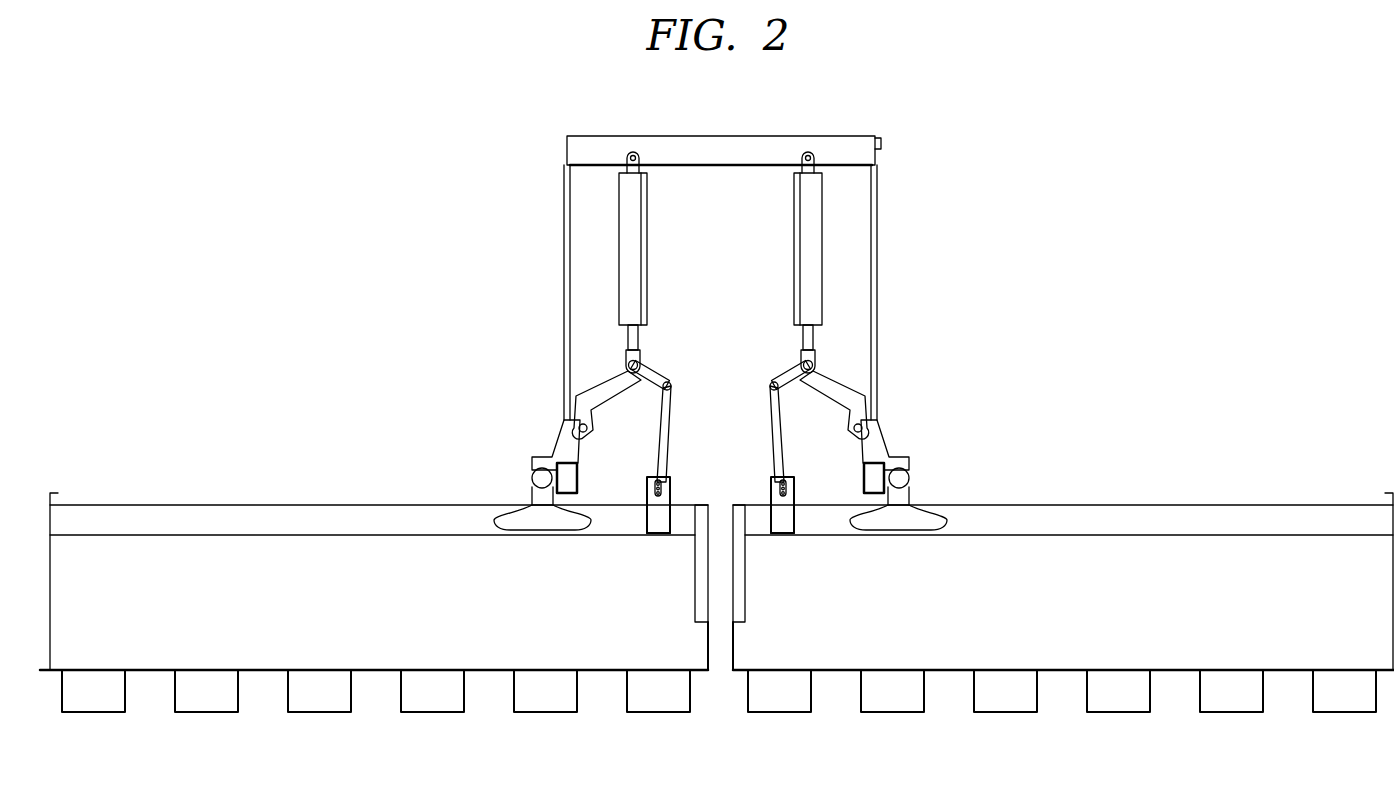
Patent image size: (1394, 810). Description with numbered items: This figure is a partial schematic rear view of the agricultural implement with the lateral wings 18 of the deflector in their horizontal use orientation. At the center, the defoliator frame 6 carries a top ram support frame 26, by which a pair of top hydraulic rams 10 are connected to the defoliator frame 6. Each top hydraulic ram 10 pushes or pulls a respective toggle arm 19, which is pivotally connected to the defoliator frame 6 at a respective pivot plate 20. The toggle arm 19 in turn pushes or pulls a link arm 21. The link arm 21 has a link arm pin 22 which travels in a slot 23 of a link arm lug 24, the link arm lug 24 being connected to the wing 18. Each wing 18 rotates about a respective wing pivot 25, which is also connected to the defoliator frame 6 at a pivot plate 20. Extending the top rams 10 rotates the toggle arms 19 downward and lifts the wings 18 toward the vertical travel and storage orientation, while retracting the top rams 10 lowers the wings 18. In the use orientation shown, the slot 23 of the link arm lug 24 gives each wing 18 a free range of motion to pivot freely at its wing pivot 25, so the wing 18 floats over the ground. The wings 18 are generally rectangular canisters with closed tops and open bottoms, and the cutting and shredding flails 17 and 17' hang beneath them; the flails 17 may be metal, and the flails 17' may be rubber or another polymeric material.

The top ram support frame 26 is at (722, 135).
The top hydraulic ram 10 is at (648, 217).
The toggle arm 19 is at (653, 372).
The pivot plate 20 is at (555, 438).
The link arm 21 is at (767, 407).
The link arm pin 22 is at (766, 490).
The slot 23 is at (655, 467).
The link arm lug 24 is at (657, 534).
The wing pivot 25 is at (530, 477).
The defoliator frame 6 is at (577, 477).
The lateral wing 18 is at (288, 503).
The flail 17 is at (719, 720).
The flail 17' is at (719, 720).